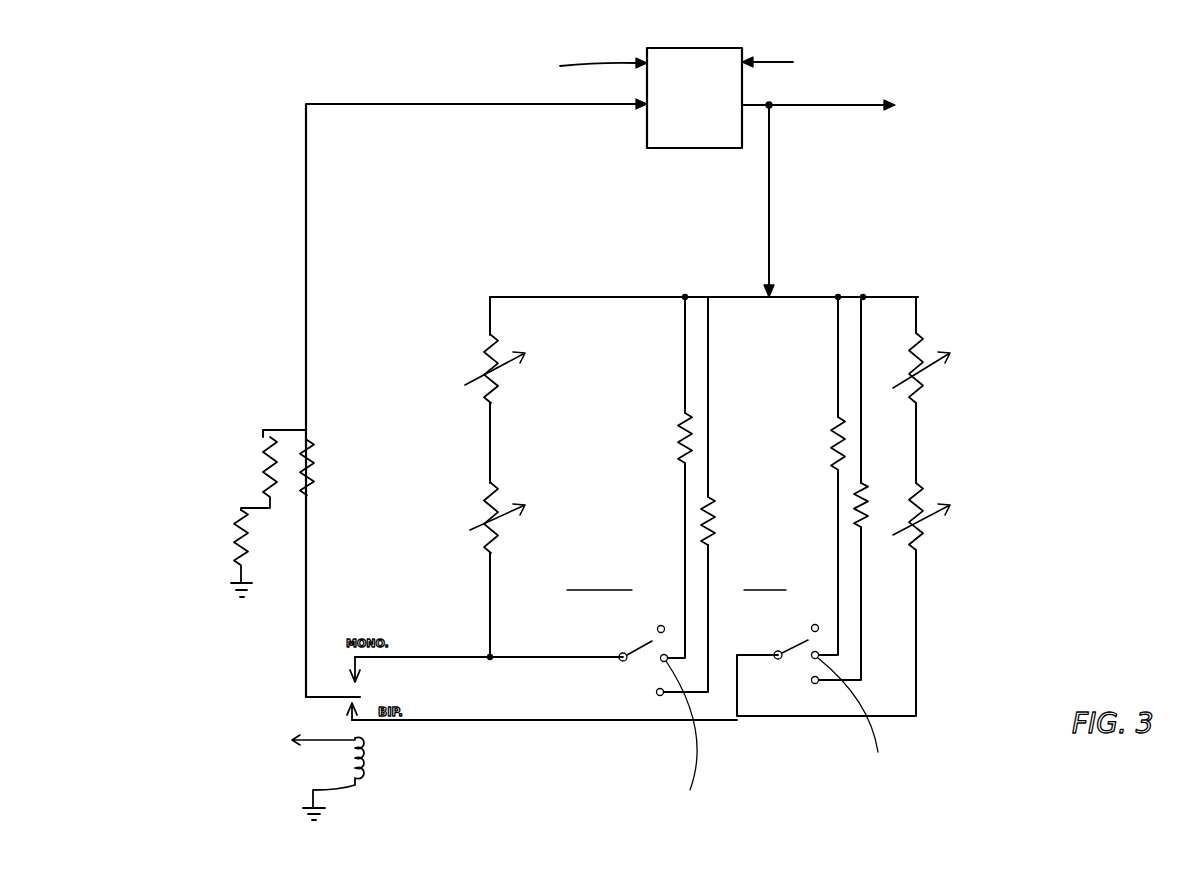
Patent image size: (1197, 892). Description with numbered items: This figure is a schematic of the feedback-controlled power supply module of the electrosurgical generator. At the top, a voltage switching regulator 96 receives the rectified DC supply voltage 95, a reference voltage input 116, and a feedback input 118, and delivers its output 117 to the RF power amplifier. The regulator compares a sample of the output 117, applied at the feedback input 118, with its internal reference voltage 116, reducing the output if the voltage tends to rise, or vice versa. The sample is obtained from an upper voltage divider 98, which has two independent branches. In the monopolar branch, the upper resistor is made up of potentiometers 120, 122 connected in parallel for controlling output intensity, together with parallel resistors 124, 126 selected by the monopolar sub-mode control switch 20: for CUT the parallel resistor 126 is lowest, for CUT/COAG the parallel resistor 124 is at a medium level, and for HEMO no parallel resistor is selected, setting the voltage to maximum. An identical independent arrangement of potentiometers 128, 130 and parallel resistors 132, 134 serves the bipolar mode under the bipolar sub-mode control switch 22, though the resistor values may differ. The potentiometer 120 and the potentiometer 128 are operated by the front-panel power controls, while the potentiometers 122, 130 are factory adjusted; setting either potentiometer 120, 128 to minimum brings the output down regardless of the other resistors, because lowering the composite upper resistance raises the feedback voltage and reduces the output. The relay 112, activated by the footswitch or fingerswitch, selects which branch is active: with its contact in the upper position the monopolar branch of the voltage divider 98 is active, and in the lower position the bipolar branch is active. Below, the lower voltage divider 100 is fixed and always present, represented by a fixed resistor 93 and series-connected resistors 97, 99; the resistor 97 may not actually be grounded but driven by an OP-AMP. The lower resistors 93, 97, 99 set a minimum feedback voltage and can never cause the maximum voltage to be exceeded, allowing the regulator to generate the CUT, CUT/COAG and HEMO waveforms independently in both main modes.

The sub-mode control switch 20 is at (616, 694).
The sub-mode control switch 22 is at (790, 694).
The fixed resistor 93 is at (325, 466).
The rectified DC supply voltage 95 is at (783, 64).
The voltage switching regulator 96 is at (712, 148).
The series resistor 97 is at (263, 452).
The upper voltage divider 98 is at (880, 280).
The series resistor 99 is at (236, 560).
The lower voltage divider 100 is at (334, 418).
The power relay 112 is at (365, 773).
The reference voltage input 116 is at (571, 69).
The output 117 is at (760, 102).
The feedback input 118 is at (596, 105).
The potentiometer 120 is at (480, 397).
The potentiometer 122 is at (482, 546).
The parallel resistor 124 is at (672, 440).
The parallel resistor 126 is at (712, 512).
The potentiometer 128 is at (922, 390).
The potentiometer 130 is at (924, 541).
The parallel resistor 132 is at (832, 438).
The parallel resistor 134 is at (871, 494).